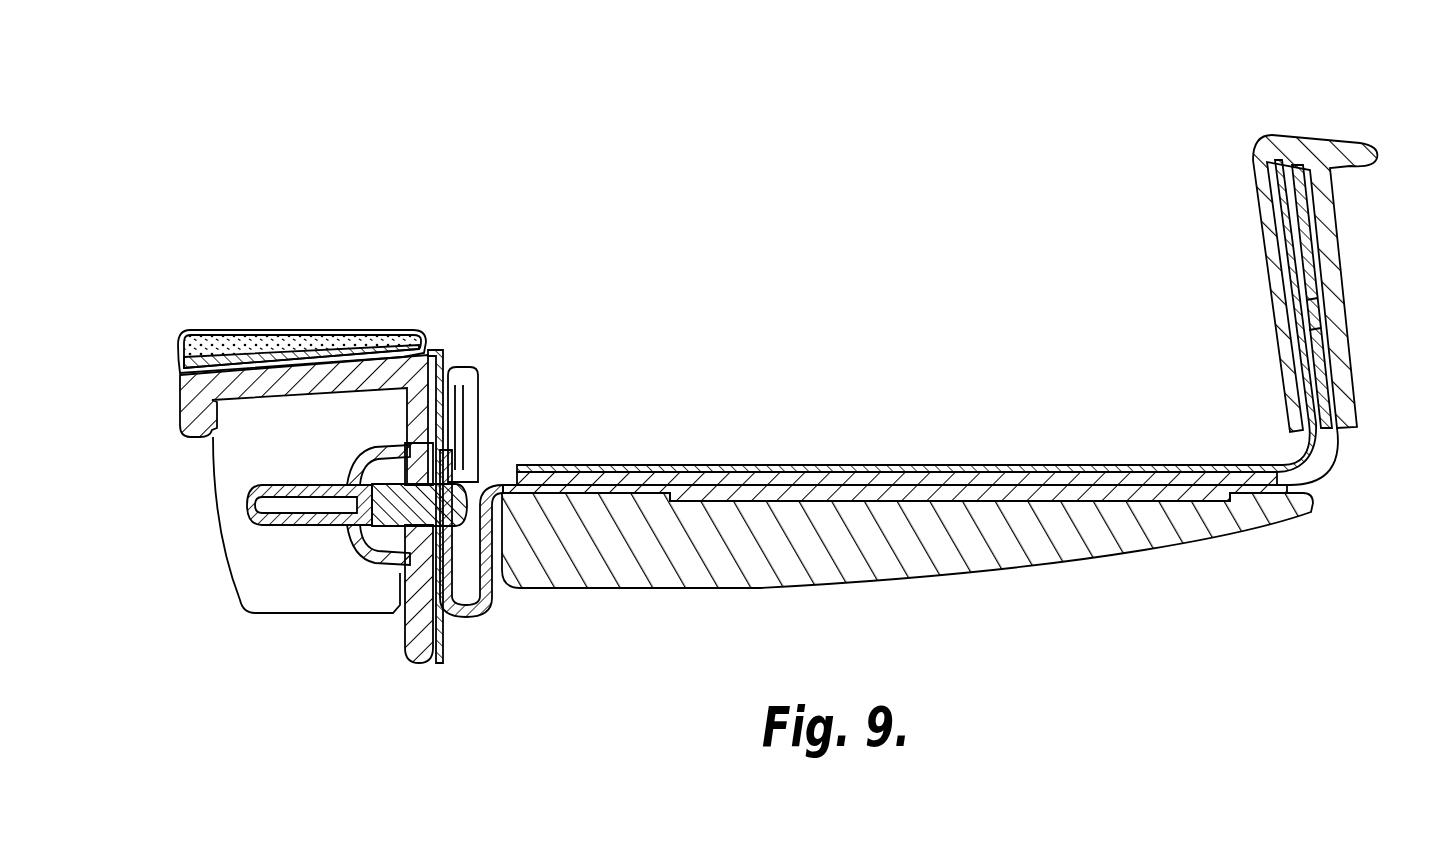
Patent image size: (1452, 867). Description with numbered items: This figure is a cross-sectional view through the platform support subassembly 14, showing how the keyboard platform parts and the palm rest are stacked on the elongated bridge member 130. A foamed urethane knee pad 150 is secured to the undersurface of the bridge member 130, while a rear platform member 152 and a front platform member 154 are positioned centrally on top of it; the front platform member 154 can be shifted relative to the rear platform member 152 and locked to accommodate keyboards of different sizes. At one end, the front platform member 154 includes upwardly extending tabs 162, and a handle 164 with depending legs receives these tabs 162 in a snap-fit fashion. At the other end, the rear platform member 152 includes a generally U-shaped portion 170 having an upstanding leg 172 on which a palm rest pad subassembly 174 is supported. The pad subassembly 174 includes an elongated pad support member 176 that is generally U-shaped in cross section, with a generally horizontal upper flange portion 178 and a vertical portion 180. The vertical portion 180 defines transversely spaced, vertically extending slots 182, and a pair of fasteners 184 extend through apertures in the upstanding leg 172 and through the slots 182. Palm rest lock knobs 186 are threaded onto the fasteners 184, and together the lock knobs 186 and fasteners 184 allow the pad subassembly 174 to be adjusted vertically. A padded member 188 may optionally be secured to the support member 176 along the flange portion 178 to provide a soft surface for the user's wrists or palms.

The platform support subassembly 14 is at (776, 242).
The bridge member 130 is at (960, 487).
The knee pad 150 is at (617, 590).
The rear platform member 152 is at (498, 470).
The front platform member 154 is at (1078, 470).
The upwardly extending tabs 162 is at (1305, 262).
The handle 164 is at (1290, 137).
The U-shaped portion 170 is at (473, 620).
The upstanding leg 172 is at (470, 400).
The palm rest pad subassembly 174 is at (321, 300).
The elongated pad support member 176 is at (192, 447).
The upper flange portion 178 is at (400, 330).
The vertical portion 180 is at (410, 567).
The slots 182 is at (393, 585).
The fasteners 184 is at (348, 530).
The palm rest lock knobs 186 is at (250, 517).
The padded member 188 is at (233, 343).